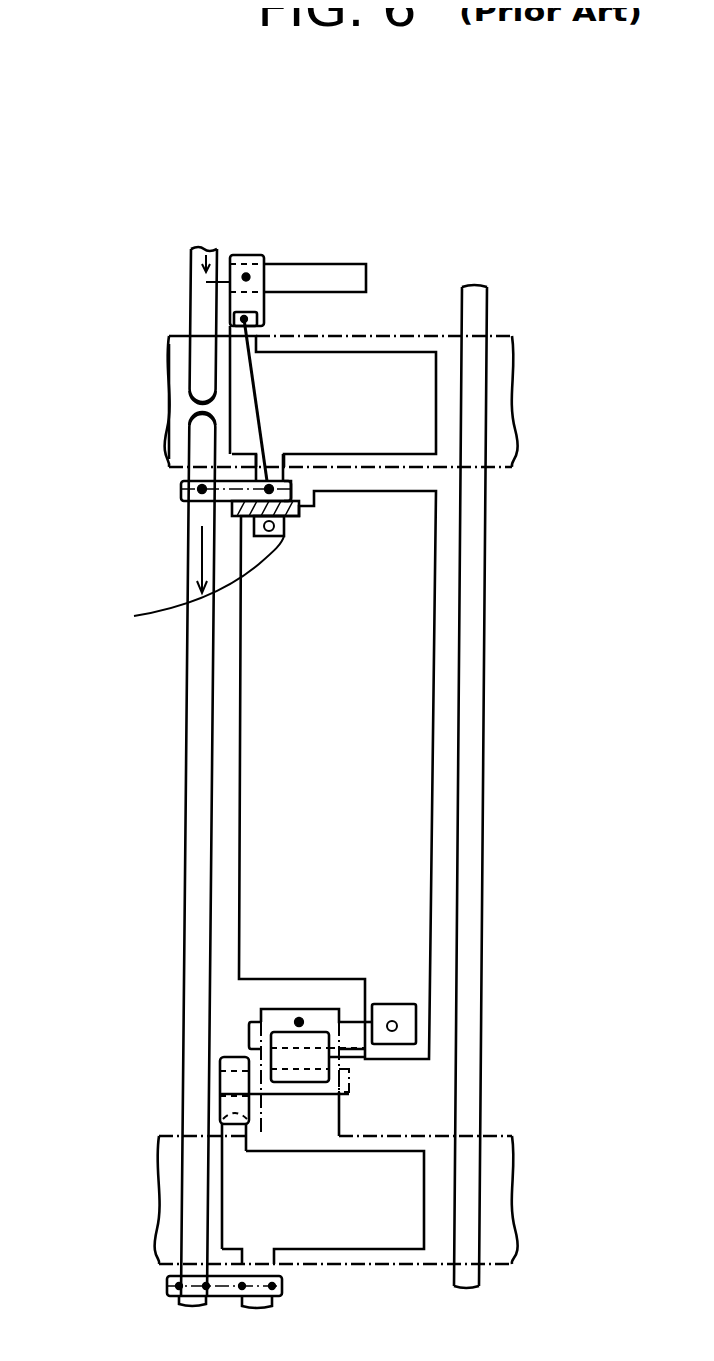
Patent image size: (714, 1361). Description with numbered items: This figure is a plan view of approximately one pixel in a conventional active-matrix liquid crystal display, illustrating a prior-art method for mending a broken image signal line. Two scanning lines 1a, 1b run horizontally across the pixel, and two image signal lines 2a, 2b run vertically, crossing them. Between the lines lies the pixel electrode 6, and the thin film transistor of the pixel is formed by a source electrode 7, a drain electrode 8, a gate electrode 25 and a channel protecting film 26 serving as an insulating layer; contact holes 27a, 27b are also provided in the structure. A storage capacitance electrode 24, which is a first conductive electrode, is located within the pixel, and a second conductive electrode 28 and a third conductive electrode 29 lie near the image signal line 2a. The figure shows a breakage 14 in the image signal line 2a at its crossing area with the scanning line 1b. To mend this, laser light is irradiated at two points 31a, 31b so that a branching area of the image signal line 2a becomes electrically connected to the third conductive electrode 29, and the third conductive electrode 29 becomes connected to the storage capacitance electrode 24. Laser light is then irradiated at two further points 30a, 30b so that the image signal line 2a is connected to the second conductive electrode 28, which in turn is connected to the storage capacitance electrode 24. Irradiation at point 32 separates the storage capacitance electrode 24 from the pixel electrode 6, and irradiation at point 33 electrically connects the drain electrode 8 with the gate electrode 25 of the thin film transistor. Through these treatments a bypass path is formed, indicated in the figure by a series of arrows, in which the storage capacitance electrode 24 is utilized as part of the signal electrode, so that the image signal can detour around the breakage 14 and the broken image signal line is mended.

The scanning line 1a is at (158, 1201).
The scanning line 1b is at (183, 380).
The image signal line 2a is at (207, 832).
The image signal line 2b is at (470, 835).
The pixel electrode 6 is at (400, 668).
The source electrode 7 is at (350, 273).
The drain electrode 8 is at (267, 1033).
The breakage 14 is at (185, 414).
The storage capacitance electrode 24 is at (380, 365).
The gate electrode 25 is at (272, 1015).
The channel protecting film 26 is at (362, 1062).
The contact hole 27a is at (171, 582).
The contact hole 27b is at (398, 1027).
The second conductive electrode 28 is at (180, 487).
The third conductive electrode 29 is at (247, 262).
The laser irradiation point 30a is at (187, 497).
The laser irradiation point 30b is at (293, 487).
The laser irradiation point 31a is at (250, 276).
The laser irradiation point 31b is at (262, 322).
The laser irradiation point 32 is at (283, 520).
The laser irradiation point 33 is at (300, 1020).